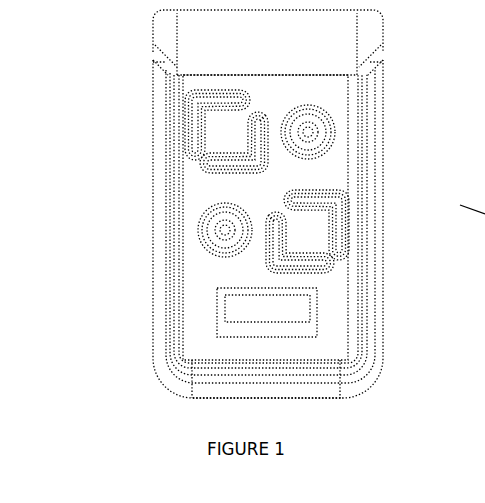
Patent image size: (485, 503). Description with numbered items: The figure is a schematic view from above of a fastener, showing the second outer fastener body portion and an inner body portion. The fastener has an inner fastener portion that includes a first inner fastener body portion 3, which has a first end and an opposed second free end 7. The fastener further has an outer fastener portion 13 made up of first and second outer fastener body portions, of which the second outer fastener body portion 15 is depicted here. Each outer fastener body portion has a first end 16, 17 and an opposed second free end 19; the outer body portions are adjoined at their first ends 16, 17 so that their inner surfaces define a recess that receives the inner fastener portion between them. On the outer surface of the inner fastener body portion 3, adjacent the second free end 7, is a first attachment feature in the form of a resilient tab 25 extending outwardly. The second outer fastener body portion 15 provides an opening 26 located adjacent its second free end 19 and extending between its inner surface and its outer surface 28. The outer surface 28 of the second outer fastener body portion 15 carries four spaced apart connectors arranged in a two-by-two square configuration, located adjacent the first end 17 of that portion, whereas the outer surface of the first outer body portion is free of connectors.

The first inner fastener body portion 3 is at (377, 220).
The second free end 7 is at (300, 390).
The outer fastener portion 13 is at (186, 194).
The second outer fastener body portion 15 is at (190, 178).
The first end 16 is at (474, 20).
The first end 17 is at (200, 11).
The second free end 19 is at (252, 360).
The resilient tab 25 is at (260, 313).
The opening 26 is at (216, 303).
The outer surface 28 is at (202, 272).